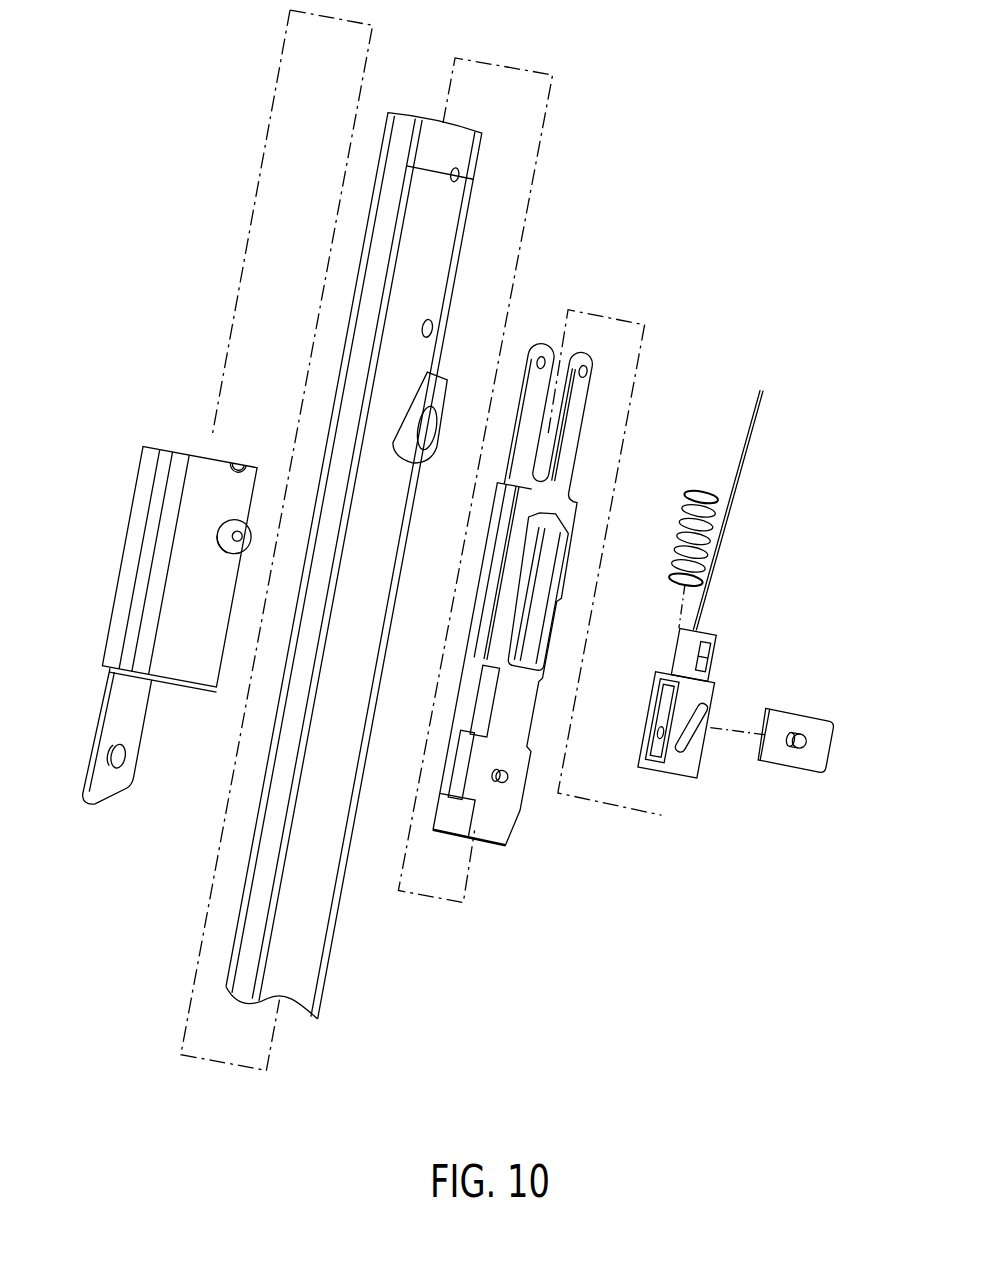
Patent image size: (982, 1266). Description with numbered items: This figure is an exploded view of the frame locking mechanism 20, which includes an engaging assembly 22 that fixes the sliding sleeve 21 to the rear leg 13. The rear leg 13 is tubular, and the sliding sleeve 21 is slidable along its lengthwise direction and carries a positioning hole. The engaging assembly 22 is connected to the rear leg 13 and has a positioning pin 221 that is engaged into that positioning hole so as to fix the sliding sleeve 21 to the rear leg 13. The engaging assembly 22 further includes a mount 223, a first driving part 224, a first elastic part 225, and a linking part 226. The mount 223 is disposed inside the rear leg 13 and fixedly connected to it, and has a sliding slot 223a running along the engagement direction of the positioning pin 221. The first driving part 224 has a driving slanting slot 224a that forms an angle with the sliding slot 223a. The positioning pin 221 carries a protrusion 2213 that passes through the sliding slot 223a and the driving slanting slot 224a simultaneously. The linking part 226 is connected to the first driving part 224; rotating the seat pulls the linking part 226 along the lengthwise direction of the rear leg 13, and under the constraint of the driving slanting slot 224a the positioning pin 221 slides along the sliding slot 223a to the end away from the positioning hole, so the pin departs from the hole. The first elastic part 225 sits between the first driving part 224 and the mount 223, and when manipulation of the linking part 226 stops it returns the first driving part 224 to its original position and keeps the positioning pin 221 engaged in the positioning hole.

The frame locking mechanism 20 is at (155, 111).
The rear leg 13 is at (405, 340).
The sliding sleeve 21 is at (150, 548).
The engaging assembly 22 is at (847, 950).
The positioning pin 221 is at (787, 757).
The protrusion 2213 is at (807, 740).
The mount 223 is at (503, 805).
The sliding slot 223a is at (497, 783).
The first driving part 224 is at (678, 773).
The driving slanting slot 224a is at (690, 723).
The first elastic part 225 is at (668, 587).
The linking part 226 is at (725, 545).